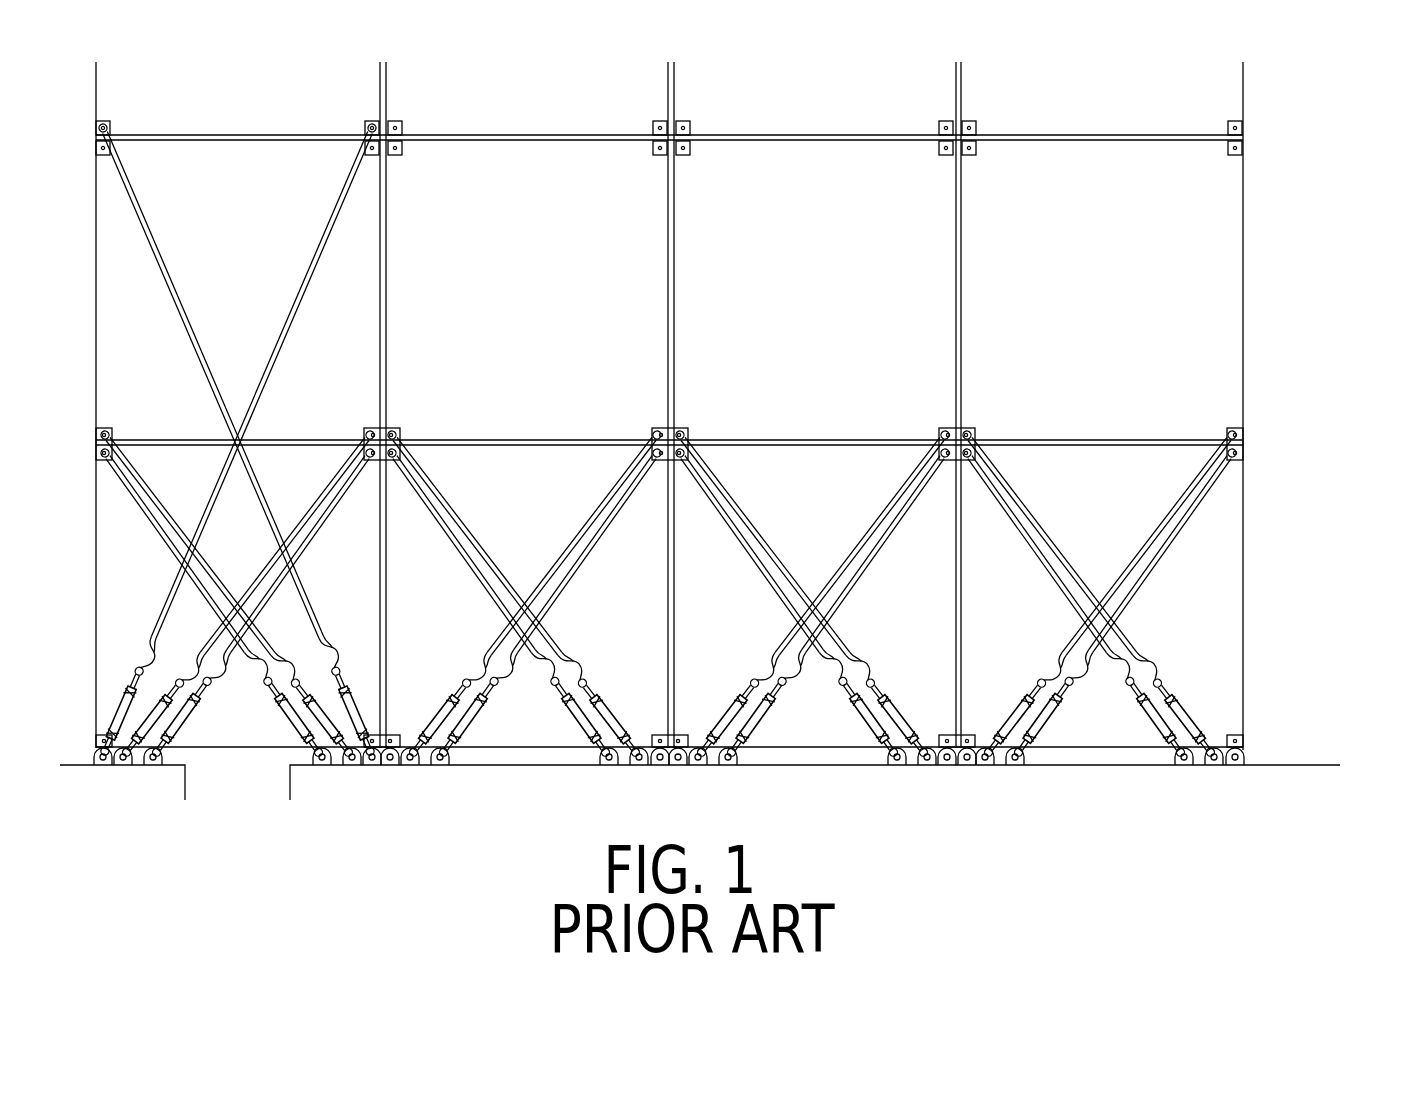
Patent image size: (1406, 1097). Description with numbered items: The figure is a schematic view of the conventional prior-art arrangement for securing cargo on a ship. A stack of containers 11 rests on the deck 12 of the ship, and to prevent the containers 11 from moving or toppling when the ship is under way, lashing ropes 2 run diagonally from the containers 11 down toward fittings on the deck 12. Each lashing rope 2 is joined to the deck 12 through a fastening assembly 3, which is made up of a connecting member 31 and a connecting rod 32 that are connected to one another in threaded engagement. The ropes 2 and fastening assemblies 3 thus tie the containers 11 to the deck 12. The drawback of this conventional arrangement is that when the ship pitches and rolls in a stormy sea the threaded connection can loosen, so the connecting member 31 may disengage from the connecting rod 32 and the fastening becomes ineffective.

The containers 11 is at (1243, 288).
The deck 12 is at (1283, 767).
The lashing ropes 2 is at (1182, 560).
The fastening assembly 3 is at (734, 723).
The connecting member 31 is at (851, 703).
The connecting rod 32 is at (925, 758).